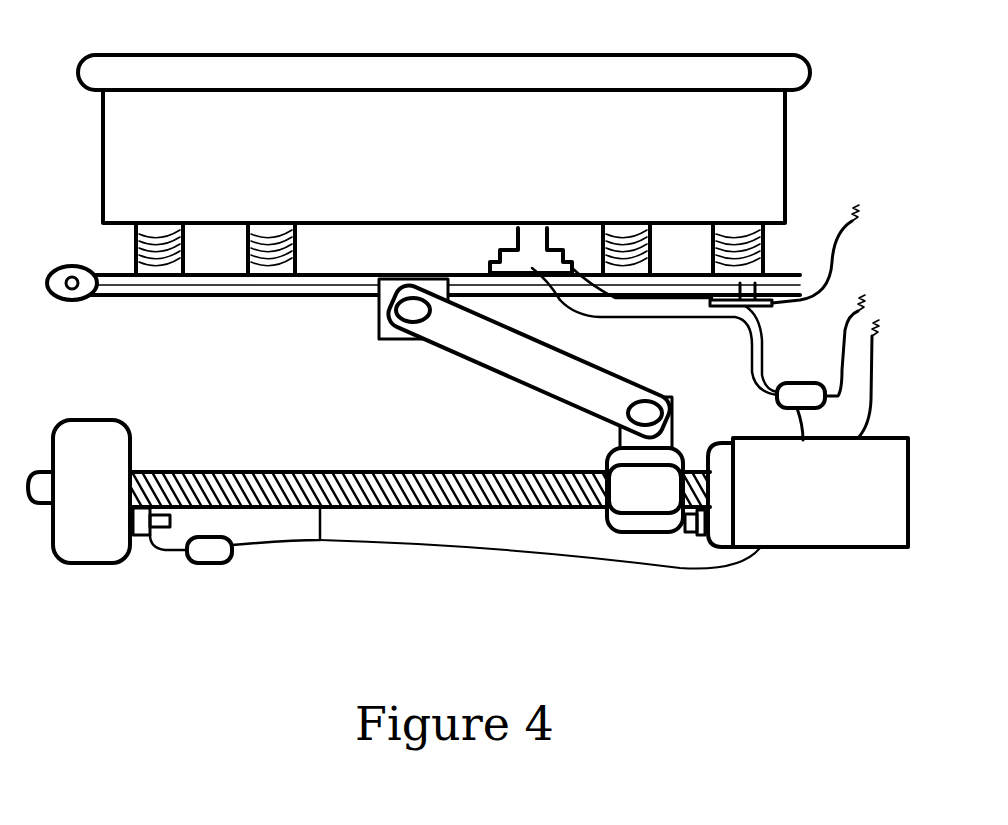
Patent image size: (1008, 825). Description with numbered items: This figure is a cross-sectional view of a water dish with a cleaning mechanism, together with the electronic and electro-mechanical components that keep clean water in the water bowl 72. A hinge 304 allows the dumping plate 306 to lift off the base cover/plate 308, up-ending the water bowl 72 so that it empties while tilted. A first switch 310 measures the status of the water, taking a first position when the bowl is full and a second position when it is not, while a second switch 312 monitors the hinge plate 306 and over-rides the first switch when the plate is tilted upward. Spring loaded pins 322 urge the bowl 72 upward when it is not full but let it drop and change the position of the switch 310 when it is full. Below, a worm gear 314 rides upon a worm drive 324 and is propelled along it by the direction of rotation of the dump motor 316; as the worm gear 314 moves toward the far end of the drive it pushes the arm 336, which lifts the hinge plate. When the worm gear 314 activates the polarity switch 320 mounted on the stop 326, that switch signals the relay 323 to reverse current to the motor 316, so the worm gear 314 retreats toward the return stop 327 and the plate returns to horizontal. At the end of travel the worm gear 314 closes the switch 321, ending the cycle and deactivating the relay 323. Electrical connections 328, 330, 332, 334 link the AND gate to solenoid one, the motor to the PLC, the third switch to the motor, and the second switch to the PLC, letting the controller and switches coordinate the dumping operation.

The water bowl 72 is at (492, 145).
The hinge 304 is at (48, 288).
The dumping plate 306 is at (333, 273).
The base cover/plate 308 is at (295, 287).
The first switch (NC) 310 is at (535, 232).
The second switch (NO) 312 is at (750, 280).
The worm gear 314 is at (617, 532).
The dump motor 316 is at (850, 547).
The polarity switch (third switch) 320 is at (128, 510).
The switch 321 is at (708, 540).
The spring loaded pins 322 is at (137, 250).
The relay 323 is at (205, 563).
The worm drive 324 is at (322, 542).
The stop 326 is at (87, 443).
The return stop 327 is at (720, 438).
The electrical connection from AND gate to solenoid one 328 is at (847, 316).
The electrical connection from motor to PLC 330 is at (875, 548).
The electrical connection from third switch to motor 332 is at (673, 570).
The electrical connection from second switch to PLC 334 is at (845, 222).
The arm 336 is at (790, 548).